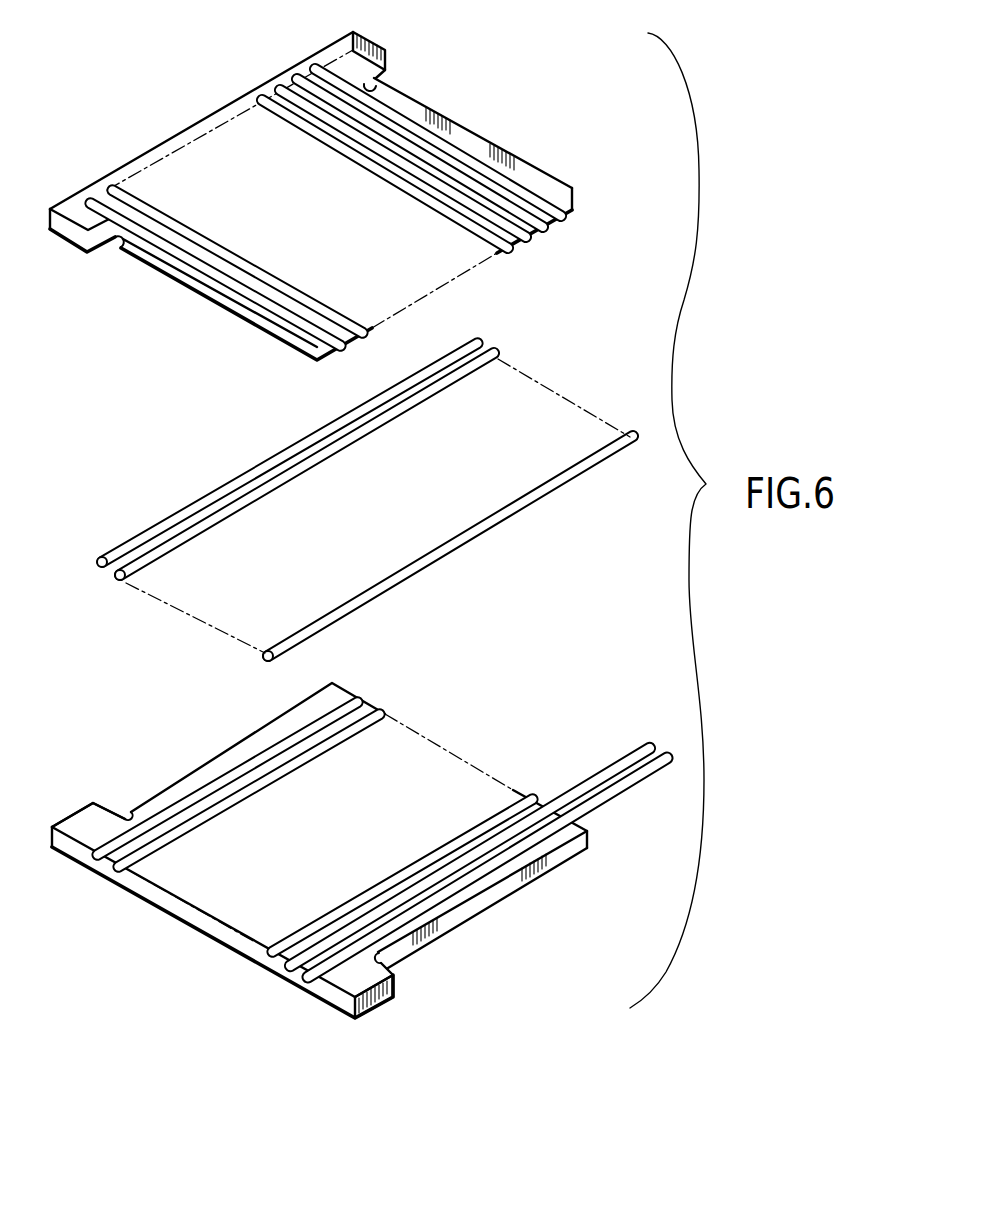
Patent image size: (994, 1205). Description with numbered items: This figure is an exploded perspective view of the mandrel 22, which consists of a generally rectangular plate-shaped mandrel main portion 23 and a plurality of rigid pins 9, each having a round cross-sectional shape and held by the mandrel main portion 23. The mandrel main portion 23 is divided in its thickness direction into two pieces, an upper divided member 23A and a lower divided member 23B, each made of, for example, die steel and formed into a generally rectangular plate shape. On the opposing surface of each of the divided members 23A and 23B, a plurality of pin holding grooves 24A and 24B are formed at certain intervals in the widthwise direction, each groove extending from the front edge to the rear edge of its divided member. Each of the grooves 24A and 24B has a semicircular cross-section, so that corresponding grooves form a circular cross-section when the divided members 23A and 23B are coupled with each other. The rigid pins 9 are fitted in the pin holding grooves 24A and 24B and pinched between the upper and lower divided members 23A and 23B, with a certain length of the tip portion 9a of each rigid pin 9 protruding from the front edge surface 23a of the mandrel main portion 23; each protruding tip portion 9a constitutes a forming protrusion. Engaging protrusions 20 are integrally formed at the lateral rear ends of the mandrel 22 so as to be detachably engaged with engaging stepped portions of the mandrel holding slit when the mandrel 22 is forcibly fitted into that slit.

The mandrel 22 is at (355, 181).
The mandrel main portion 23 is at (462, 128).
The upper divided member 23A is at (150, 151).
The front edge surface 23a is at (575, 191).
The pin holding grooves 24A is at (385, 175).
The rigid pins 9 is at (472, 383).
The pin holding grooves 24B is at (318, 747).
The tip portion 9a is at (627, 752).
The engaging protrusions 20 is at (70, 820).
The lower divided member 23B is at (171, 917).